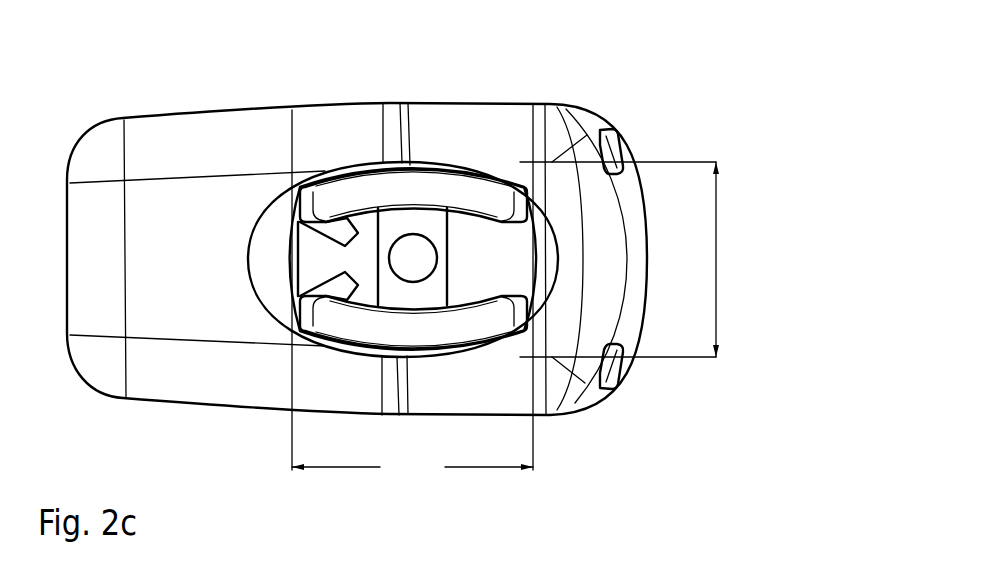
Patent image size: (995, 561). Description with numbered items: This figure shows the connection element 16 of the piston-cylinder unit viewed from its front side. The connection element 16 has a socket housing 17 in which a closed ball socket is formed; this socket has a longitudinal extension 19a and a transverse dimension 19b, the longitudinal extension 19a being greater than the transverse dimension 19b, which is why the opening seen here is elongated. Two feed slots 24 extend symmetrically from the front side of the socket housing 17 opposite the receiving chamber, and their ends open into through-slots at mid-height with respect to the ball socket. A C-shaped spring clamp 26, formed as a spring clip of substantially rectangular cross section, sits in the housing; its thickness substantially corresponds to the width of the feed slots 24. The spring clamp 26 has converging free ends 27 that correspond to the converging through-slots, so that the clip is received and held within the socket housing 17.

The connection element 16 is at (333, 92).
The socket housing 17 is at (503, 130).
The longitudinal extension 19a is at (412, 297).
The transverse dimension 19b is at (638, 259).
The feed slots 24 is at (608, 185).
The spring clamp 26 is at (322, 215).
The free ends 27 is at (437, 203).